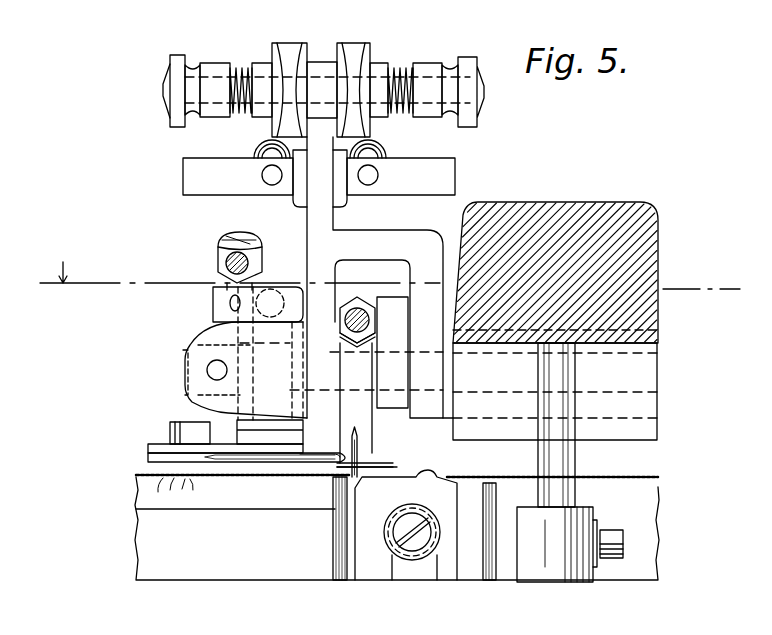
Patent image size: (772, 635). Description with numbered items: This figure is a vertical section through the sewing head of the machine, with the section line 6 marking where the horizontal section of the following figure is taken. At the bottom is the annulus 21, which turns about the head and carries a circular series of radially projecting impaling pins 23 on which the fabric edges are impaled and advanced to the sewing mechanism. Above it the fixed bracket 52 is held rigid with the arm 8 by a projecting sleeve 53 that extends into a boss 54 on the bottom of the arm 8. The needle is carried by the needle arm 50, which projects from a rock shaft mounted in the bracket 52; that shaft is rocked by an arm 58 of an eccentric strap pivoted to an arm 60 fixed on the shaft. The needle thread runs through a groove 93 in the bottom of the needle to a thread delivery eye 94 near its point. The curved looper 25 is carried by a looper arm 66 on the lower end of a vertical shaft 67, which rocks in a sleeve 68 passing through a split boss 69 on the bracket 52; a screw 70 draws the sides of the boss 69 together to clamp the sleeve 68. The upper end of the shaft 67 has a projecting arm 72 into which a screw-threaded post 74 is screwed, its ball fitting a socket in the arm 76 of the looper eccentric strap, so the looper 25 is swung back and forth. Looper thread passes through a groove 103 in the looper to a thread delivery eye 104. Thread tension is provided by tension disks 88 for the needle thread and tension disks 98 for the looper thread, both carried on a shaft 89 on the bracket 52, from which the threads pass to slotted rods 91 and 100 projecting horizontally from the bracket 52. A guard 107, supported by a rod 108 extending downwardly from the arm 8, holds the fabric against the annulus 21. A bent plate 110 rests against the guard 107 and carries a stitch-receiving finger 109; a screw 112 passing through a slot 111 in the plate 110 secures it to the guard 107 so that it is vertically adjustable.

The section line 6— 6 is at (391, 282).
The arm 8 is at (640, 250).
The annulus 21 is at (195, 563).
The impaling pins 23 is at (397, 491).
The looper 25 is at (312, 460).
The needle arm 50 is at (362, 404).
The bracket 52 is at (307, 232).
The sleeve 53 is at (446, 420).
The boss 54 is at (625, 440).
The arm of eccentric strap 58 is at (355, 297).
The arm 60 is at (390, 313).
The looper arm 66 is at (153, 444).
The vertical shaft 67 is at (200, 340).
The sleeve 68 is at (205, 398).
The split boss 69 is at (200, 358).
The screw 70 is at (207, 372).
The projecting arm 72 is at (215, 307).
The screw-threaded post 74 is at (252, 283).
The arm of eccentric strap 76 is at (226, 262).
The tension disks 88 is at (361, 46).
The shaft 89 is at (165, 100).
The rod 91 is at (368, 180).
The groove 93 is at (365, 466).
The thread delivery eye 94 is at (360, 443).
The tension disks 98 is at (298, 46).
The rod 100 is at (272, 180).
The groove 103 is at (268, 464).
The thread delivery eye 104 is at (332, 455).
The guard 107 is at (620, 573).
The rod 108 is at (572, 460).
The stitch-receiving finger 109 is at (346, 474).
The bent plate 110 is at (367, 568).
The slot 111 is at (434, 565).
The screw 112 is at (414, 548).